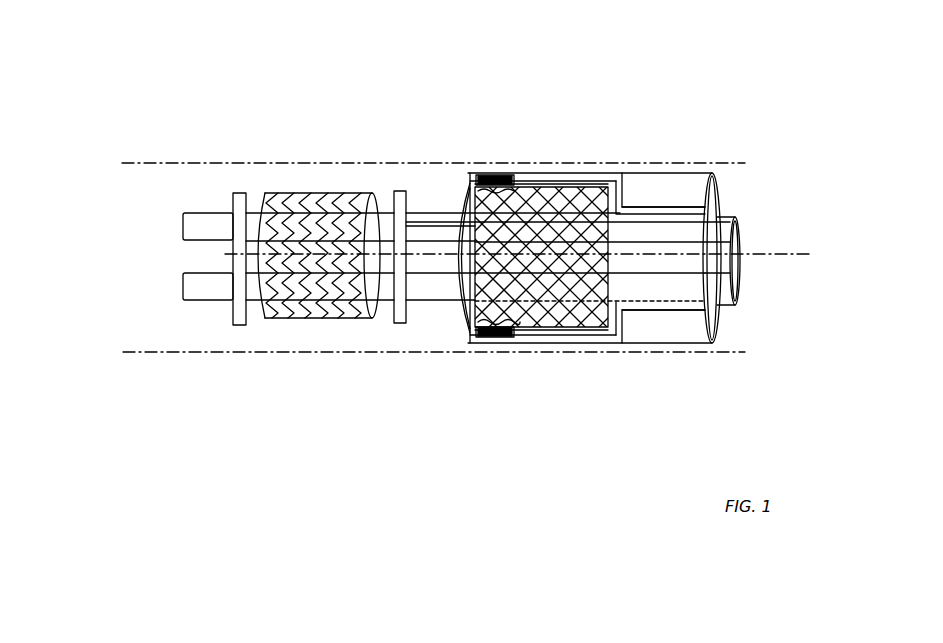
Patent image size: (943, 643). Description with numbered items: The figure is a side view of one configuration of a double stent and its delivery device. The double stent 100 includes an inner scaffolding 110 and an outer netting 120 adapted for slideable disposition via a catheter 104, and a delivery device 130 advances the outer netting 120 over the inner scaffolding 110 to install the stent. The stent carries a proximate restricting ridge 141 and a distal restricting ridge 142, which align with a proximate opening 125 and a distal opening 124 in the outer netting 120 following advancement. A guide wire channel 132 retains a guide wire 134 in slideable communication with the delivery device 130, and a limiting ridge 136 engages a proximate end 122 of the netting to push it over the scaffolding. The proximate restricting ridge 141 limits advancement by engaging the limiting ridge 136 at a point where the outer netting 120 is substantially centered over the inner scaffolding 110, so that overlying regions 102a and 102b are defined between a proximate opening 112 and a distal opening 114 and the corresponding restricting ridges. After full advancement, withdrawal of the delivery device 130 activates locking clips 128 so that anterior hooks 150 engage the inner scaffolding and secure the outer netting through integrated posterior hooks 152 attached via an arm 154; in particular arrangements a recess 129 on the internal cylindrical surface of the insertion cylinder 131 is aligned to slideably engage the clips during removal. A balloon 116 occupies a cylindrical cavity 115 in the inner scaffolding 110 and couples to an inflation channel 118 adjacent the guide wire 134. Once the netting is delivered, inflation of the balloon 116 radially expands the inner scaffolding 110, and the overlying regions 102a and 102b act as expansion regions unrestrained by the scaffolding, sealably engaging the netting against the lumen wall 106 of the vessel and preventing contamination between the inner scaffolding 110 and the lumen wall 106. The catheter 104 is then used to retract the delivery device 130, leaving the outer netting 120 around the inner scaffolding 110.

The double stent 100 is at (255, 108).
The overlying region 102a is at (375, 335).
The overlying region 102b is at (257, 325).
The catheter 104 is at (418, 301).
The lumen wall 106 is at (153, 163).
The inner scaffolding 110 is at (313, 193).
The proximate opening 112 is at (347, 320).
The distal opening 114 is at (257, 175).
The cylindrical cavity 115 is at (212, 257).
The balloon 116 is at (382, 318).
The inflation channel 118 is at (432, 213).
The outer netting 120 is at (558, 186).
The proximate end 122 is at (617, 192).
The distal opening 124 is at (467, 205).
The proximate opening 125 is at (618, 330).
The locking clips 128 is at (508, 325).
The recess 129 is at (503, 180).
The delivery device 130 is at (715, 175).
The insertion cylinder 131 is at (667, 343).
The guide wire channel 132 is at (466, 333).
The guide wire 134 is at (793, 253).
The limiting ridge 136 is at (622, 192).
The proximate restricting ridge 141 is at (402, 325).
The distal restricting ridge 142 is at (240, 325).
The anterior hooks 150 is at (478, 188).
The posterior hooks 152 is at (513, 200).
The arm 154 is at (483, 180).